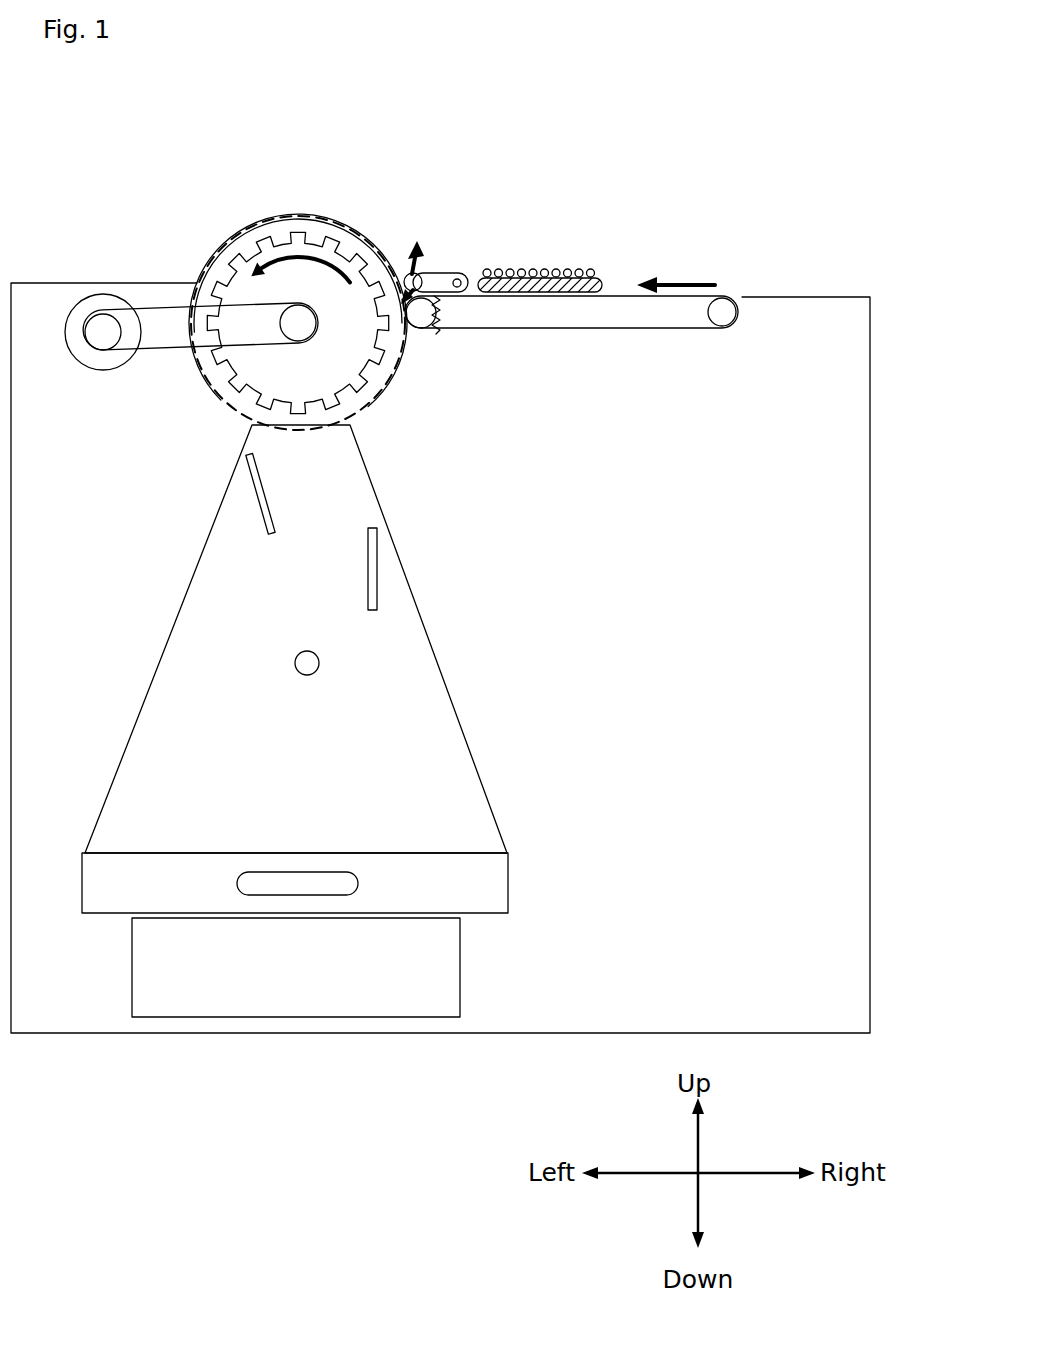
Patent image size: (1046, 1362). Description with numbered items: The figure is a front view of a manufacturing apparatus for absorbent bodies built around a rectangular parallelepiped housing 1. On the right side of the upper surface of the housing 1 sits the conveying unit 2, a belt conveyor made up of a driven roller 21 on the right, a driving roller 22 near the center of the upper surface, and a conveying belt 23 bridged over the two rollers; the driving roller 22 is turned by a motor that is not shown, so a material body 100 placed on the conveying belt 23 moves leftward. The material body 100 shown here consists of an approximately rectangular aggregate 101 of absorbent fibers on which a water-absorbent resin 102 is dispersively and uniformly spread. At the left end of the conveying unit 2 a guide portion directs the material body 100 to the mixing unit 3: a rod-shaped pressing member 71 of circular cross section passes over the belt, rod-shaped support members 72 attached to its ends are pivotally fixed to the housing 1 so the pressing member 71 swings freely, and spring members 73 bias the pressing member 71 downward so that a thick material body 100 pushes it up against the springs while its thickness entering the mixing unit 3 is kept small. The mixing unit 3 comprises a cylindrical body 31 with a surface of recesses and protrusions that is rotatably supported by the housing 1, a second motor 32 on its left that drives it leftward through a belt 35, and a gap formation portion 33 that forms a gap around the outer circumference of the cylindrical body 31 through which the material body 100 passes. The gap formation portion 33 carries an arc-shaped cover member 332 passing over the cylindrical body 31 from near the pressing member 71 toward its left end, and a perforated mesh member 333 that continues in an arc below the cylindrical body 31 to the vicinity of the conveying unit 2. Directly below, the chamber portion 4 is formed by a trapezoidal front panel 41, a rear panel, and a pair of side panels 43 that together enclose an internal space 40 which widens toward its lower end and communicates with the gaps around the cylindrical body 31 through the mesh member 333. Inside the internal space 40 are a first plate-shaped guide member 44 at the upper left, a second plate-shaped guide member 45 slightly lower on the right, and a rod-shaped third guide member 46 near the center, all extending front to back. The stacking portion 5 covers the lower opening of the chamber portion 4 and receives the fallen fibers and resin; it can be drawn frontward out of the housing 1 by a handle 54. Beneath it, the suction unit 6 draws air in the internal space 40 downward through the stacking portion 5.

The housing 1 is at (852, 465).
The conveying unit 2 is at (586, 350).
The mixing unit 3 is at (274, 188).
The chamber portion 4 is at (505, 793).
The stacking portion 5 is at (337, 974).
The suction unit 6 is at (342, 1000).
The driven roller 21 is at (722, 318).
The driving roller 22 is at (423, 322).
The conveying belt 23 is at (640, 330).
The cylindrical body 31 is at (334, 365).
The second motor 32 is at (85, 357).
The gap formation portion 33 is at (279, 322).
The belt 35 is at (167, 345).
The internal space 40 is at (222, 737).
The front panel 41 is at (173, 698).
The side panels 43 is at (382, 507).
The first guide member 44 is at (263, 483).
The second guide member 45 is at (377, 568).
The third guide member 46 is at (313, 663).
The handle 54 is at (273, 882).
The pressing member 71 is at (417, 273).
The support members 72 is at (445, 280).
The spring members 73 is at (441, 298).
The material body 100 is at (547, 247).
The aggregate of absorbent fibers 101 is at (590, 280).
The water-absorbent resin 102 is at (547, 270).
The cover member 332 is at (237, 235).
The mesh member 333 is at (224, 398).